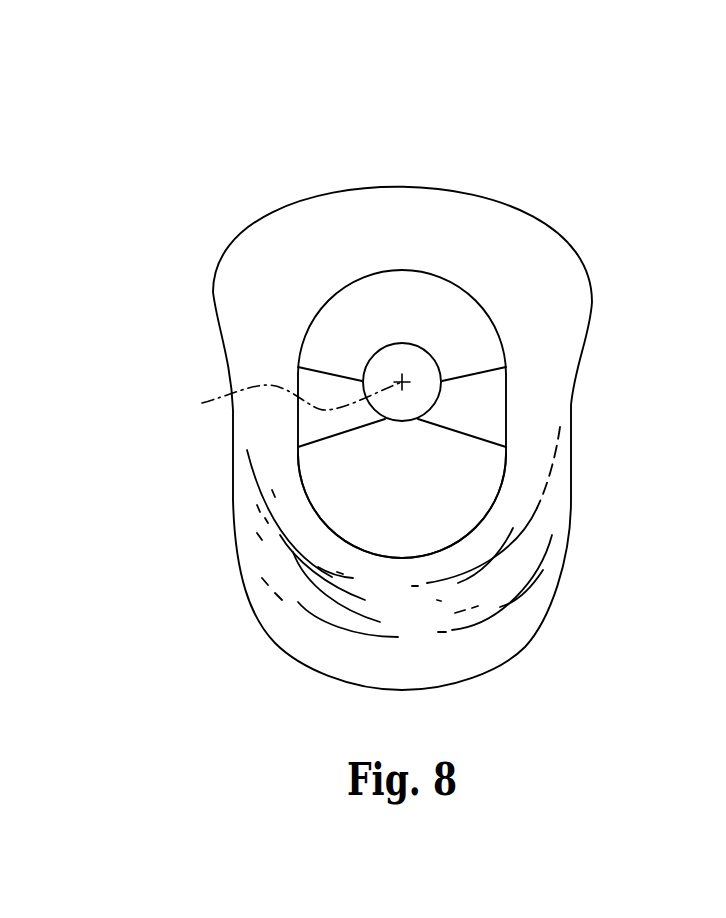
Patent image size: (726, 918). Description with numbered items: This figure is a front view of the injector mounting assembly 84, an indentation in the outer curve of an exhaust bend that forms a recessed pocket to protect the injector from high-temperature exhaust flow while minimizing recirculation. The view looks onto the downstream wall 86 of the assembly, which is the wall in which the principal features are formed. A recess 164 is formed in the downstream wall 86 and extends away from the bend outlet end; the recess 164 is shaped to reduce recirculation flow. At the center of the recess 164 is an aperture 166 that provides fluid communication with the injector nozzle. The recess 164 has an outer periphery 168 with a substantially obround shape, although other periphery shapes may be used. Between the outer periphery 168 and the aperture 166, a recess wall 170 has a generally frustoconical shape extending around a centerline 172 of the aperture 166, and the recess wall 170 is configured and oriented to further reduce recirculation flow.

The injector mounting assembly 84 is at (582, 125).
The downstream wall 86 is at (566, 276).
The recess 164 is at (462, 520).
The aperture 166 is at (440, 373).
The outer periphery 168 is at (506, 443).
The recess wall 170 is at (343, 490).
The centerline 172 is at (282, 399).